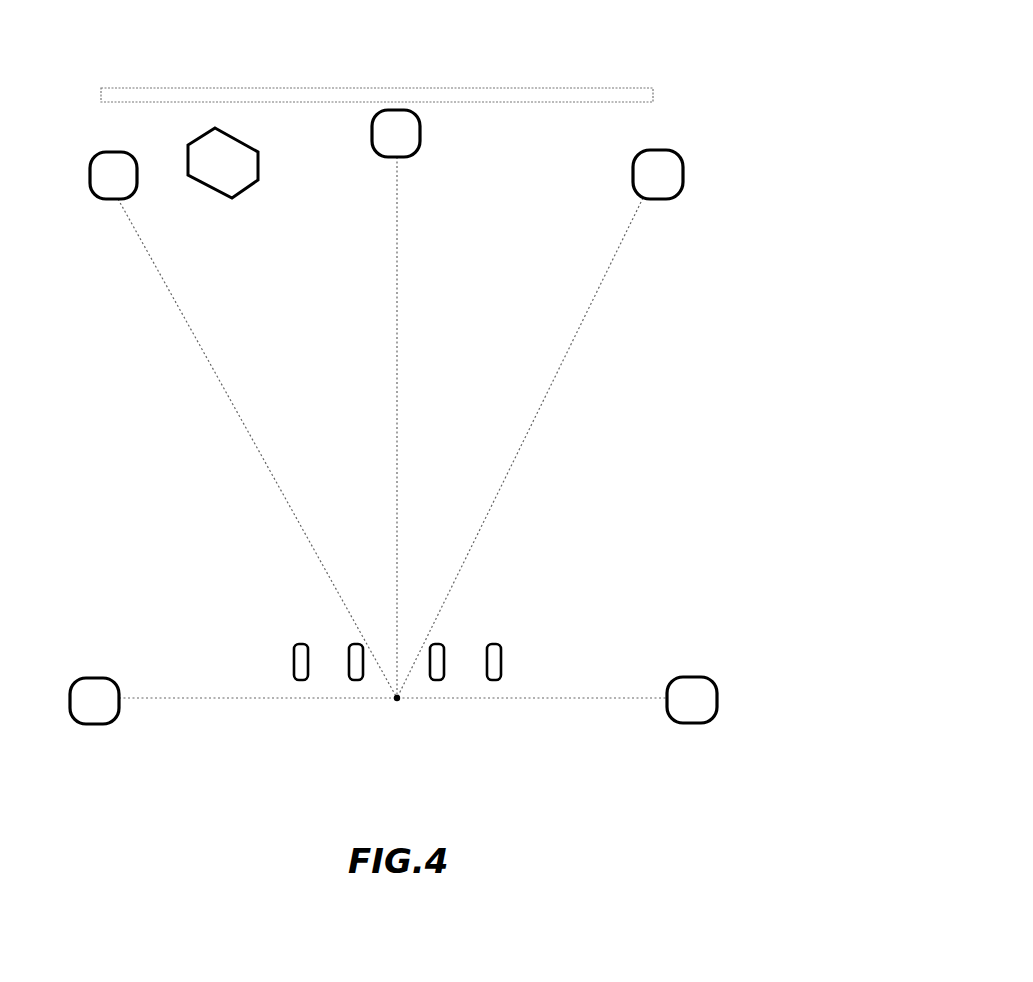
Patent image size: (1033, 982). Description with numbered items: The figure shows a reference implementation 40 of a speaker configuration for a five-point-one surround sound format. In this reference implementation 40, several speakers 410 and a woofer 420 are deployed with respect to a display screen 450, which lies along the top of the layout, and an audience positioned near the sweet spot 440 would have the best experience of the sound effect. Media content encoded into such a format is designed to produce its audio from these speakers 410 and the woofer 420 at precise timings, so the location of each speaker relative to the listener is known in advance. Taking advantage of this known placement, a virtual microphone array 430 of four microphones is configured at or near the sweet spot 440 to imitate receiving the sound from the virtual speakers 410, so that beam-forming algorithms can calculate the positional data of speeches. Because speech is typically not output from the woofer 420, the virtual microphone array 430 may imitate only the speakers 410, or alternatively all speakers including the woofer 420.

The reference implementation 40 is at (709, 35).
The speakers 410 is at (385, 434).
The woofer 420 is at (249, 163).
The virtual microphone array 430 is at (425, 662).
The sweet spot 440 is at (392, 447).
The display screen 450 is at (409, 96).